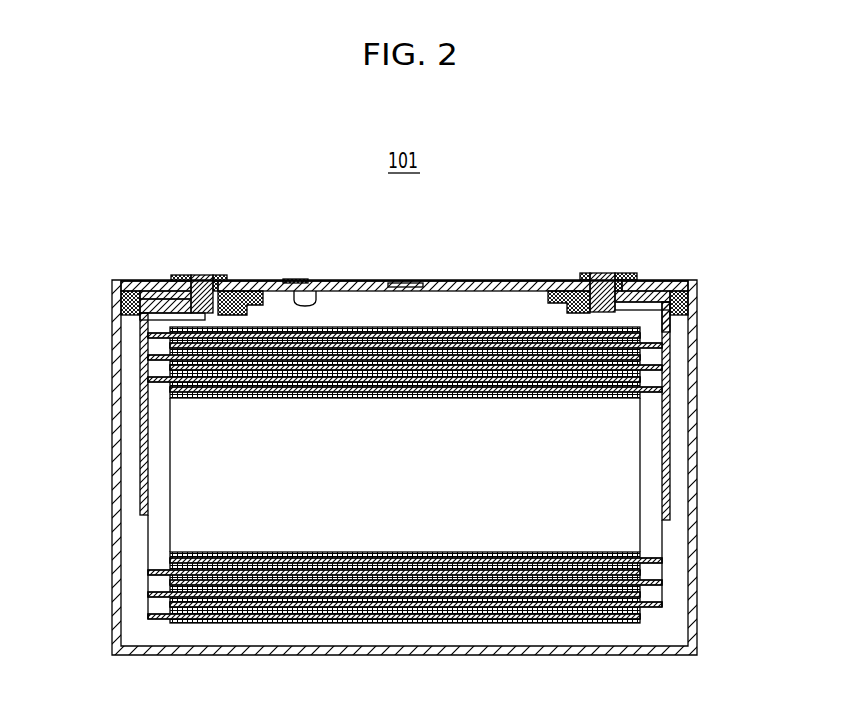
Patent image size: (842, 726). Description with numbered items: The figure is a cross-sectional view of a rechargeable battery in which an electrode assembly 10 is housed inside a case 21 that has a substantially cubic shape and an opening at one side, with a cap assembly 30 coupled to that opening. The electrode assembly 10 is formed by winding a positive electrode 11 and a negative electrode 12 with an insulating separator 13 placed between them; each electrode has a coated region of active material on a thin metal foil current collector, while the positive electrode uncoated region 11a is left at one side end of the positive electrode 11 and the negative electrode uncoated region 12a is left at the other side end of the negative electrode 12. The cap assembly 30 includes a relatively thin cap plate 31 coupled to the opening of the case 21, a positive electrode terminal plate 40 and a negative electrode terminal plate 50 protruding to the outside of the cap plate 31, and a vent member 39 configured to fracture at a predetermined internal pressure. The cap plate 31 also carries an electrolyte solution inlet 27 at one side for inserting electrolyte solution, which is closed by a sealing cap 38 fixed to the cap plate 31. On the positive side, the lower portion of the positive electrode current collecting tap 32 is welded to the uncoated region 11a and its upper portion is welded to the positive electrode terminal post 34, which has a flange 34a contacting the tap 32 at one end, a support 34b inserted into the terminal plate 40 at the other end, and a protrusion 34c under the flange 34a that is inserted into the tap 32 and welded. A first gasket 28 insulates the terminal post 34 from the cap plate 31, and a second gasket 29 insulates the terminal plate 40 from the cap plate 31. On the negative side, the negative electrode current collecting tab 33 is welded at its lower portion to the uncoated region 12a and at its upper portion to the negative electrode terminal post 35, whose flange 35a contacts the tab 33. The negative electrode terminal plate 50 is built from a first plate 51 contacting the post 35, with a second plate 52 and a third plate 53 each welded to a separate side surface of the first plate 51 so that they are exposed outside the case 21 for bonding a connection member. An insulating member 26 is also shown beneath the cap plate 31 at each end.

The electrode assembly 10 is at (403, 519).
The positive electrode 11 is at (260, 620).
The positive electrode uncoated region 11a is at (152, 620).
The negative electrode 12 is at (296, 614).
The negative electrode uncoated region 12a is at (652, 607).
The separator 13 is at (400, 603).
The case 21 is at (697, 414).
The lower insulating member 26 is at (121, 297).
The electrolyte solution inlet 27 is at (316, 291).
The first gasket 28 is at (237, 287).
The second gasket 29 is at (172, 283).
The cap assembly 30 is at (404, 246).
The cap plate 31 is at (462, 282).
The positive electrode current collecting tap 32 is at (144, 445).
The negative electrode current collecting tab 33 is at (668, 452).
The positive electrode terminal post 34 is at (149, 278).
The flange 34a is at (166, 293).
The support 34b is at (207, 276).
The protrusion 34c is at (204, 319).
The negative electrode terminal post 35 is at (632, 290).
The flange 35a is at (672, 332).
The sealing cap 38 is at (296, 280).
The vent member 39 is at (397, 282).
The positive electrode terminal plate 40 is at (188, 274).
The negative electrode terminal plate 50 is at (603, 242).
The first plate 51 is at (601, 273).
The second plate 52 is at (588, 273).
The third plate 53 is at (629, 244).